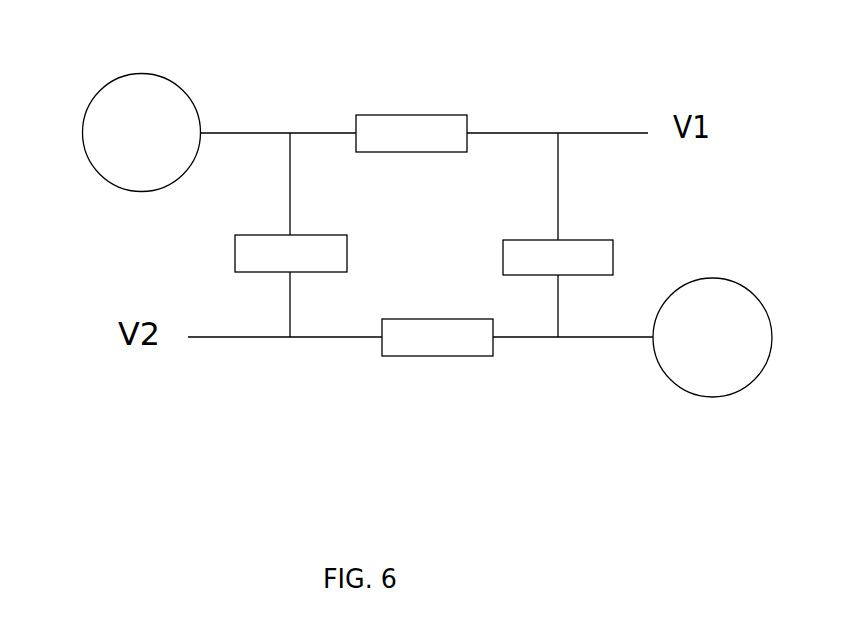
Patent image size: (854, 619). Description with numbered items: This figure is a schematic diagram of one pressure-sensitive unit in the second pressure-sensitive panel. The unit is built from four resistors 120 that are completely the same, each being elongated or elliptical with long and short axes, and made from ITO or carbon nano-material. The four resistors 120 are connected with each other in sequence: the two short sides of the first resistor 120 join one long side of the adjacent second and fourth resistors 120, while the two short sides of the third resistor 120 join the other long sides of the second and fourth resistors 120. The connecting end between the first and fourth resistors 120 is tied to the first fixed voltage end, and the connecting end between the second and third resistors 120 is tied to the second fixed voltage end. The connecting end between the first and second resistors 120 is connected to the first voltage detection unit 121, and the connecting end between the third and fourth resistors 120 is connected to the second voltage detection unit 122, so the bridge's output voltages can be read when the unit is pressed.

The resistor 120 is at (415, 113).
The first voltage detection unit 121 is at (142, 133).
The second voltage detection unit 122 is at (712, 337).